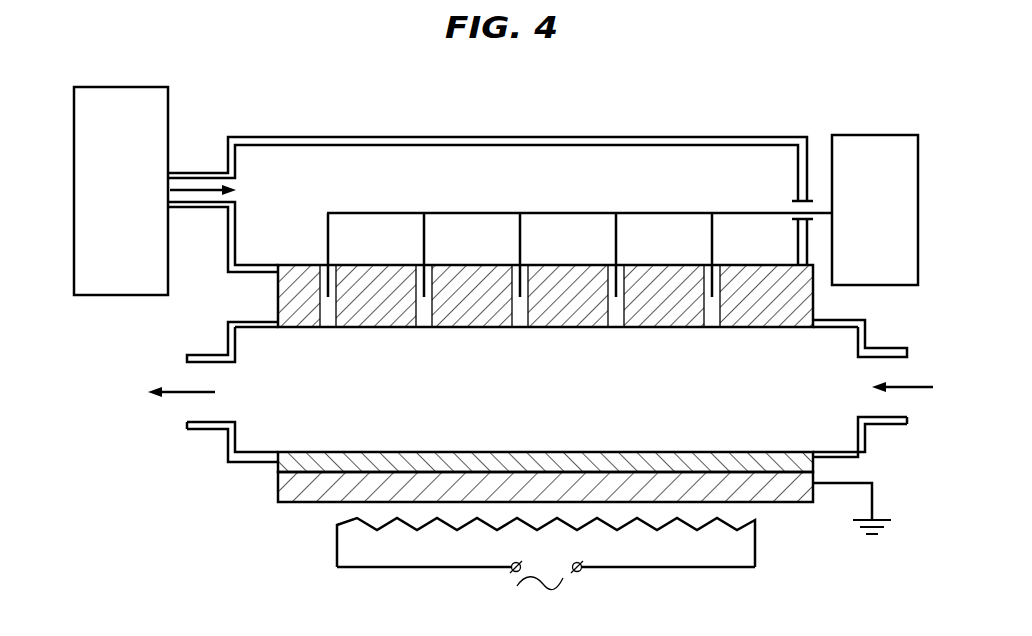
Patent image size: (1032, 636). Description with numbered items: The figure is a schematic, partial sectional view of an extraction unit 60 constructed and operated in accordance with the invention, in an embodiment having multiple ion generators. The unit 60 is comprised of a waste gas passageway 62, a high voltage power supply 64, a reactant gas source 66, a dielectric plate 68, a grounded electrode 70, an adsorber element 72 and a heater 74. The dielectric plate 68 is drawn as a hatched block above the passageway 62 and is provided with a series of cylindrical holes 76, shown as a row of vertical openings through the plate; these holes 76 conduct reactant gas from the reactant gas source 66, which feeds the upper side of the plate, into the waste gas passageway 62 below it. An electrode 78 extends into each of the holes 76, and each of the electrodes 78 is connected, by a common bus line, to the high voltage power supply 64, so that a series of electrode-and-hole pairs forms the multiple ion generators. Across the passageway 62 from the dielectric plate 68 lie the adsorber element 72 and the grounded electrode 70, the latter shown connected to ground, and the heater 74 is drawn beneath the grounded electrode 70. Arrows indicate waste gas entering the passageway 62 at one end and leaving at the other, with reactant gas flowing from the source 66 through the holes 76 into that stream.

The extraction unit 60 is at (726, 85).
The waste gas passageway 62 is at (886, 374).
The high voltage power supply 64 is at (876, 135).
The reactant gas source 66 is at (168, 108).
The dielectric plate 68 is at (442, 265).
The grounded electrode 70 is at (795, 502).
The adsorber element 72 is at (635, 452).
The heater 74 is at (337, 553).
The cylindrical holes 76 is at (330, 328).
The electrodes 78 is at (320, 248).